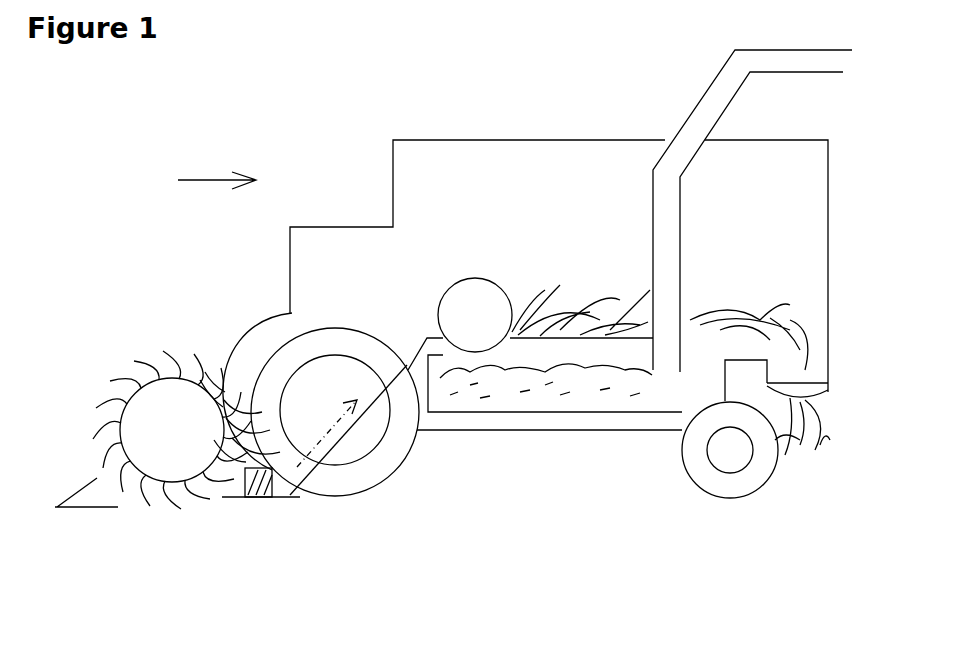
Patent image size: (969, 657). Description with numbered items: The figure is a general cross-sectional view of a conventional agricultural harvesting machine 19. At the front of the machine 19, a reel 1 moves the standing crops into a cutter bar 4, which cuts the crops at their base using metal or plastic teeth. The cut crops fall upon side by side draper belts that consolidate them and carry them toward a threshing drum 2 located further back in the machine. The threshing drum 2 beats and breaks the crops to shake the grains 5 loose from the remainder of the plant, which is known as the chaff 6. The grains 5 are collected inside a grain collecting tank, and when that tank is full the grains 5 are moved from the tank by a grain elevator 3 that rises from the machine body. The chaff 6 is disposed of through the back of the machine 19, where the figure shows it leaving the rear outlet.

The reel 1 is at (168, 427).
The threshing drum 2 is at (473, 309).
The grain elevator 3 is at (673, 227).
The cutter bar 4 is at (275, 477).
The grains 5 is at (487, 405).
The chaff 6 is at (818, 430).
The harvesting machine 19 is at (199, 183).